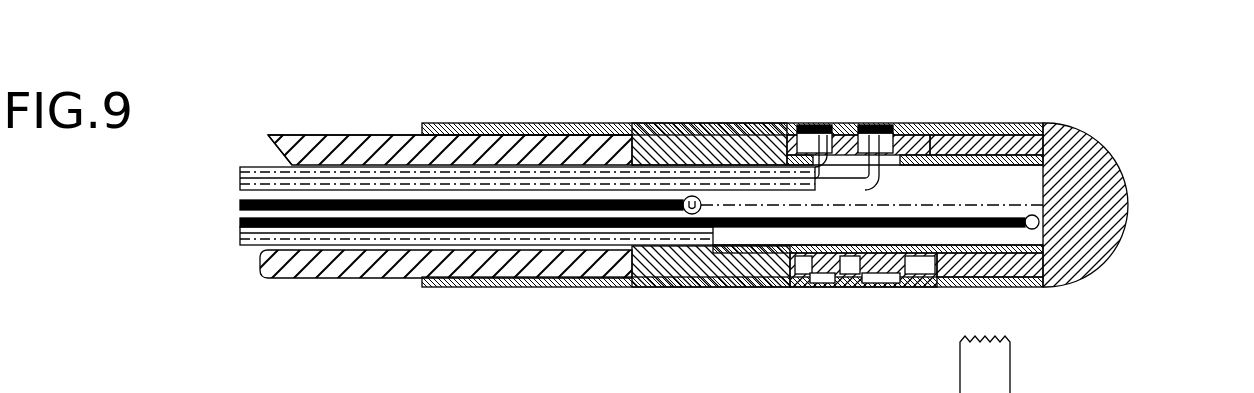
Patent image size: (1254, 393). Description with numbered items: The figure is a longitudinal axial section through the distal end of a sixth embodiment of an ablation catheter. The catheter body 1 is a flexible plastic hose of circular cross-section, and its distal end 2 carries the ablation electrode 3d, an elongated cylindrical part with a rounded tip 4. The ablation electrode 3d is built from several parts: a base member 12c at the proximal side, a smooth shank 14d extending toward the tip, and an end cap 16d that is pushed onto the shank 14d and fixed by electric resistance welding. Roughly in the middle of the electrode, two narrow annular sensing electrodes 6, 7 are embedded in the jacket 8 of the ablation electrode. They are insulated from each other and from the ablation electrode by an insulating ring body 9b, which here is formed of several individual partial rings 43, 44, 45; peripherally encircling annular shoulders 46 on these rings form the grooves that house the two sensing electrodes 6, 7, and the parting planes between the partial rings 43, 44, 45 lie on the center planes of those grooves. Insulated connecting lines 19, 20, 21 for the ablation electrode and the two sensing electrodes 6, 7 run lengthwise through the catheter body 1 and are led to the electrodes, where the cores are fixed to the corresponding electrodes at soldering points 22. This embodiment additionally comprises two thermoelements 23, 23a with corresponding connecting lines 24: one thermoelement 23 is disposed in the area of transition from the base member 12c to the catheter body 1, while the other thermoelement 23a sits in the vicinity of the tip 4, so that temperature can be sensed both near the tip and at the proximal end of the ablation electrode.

The catheter body 1 is at (287, 142).
The distal end 2 is at (524, 148).
The ablation electrode 3d is at (955, 124).
The tip 4 is at (1117, 173).
The sensing electrode 6 is at (892, 130).
The sensing electrode 7 is at (822, 130).
The jacket 8 is at (697, 262).
The insulating ring body 9b is at (857, 286).
The base member 12c is at (743, 140).
The shank 14d is at (1043, 122).
The end cap 16d is at (1067, 258).
The connecting line 19 is at (320, 240).
The connecting line 20 is at (317, 168).
The connecting line 21 is at (376, 140).
The soldering point 22 is at (880, 140).
The thermoelement 23 is at (692, 196).
The thermoelement 23a is at (1039, 222).
The connecting line 24 is at (240, 204).
The partial ring 43 is at (806, 280).
The partial ring 44 is at (874, 277).
The partial ring 45 is at (928, 268).
The annular shoulder 46 is at (827, 280).